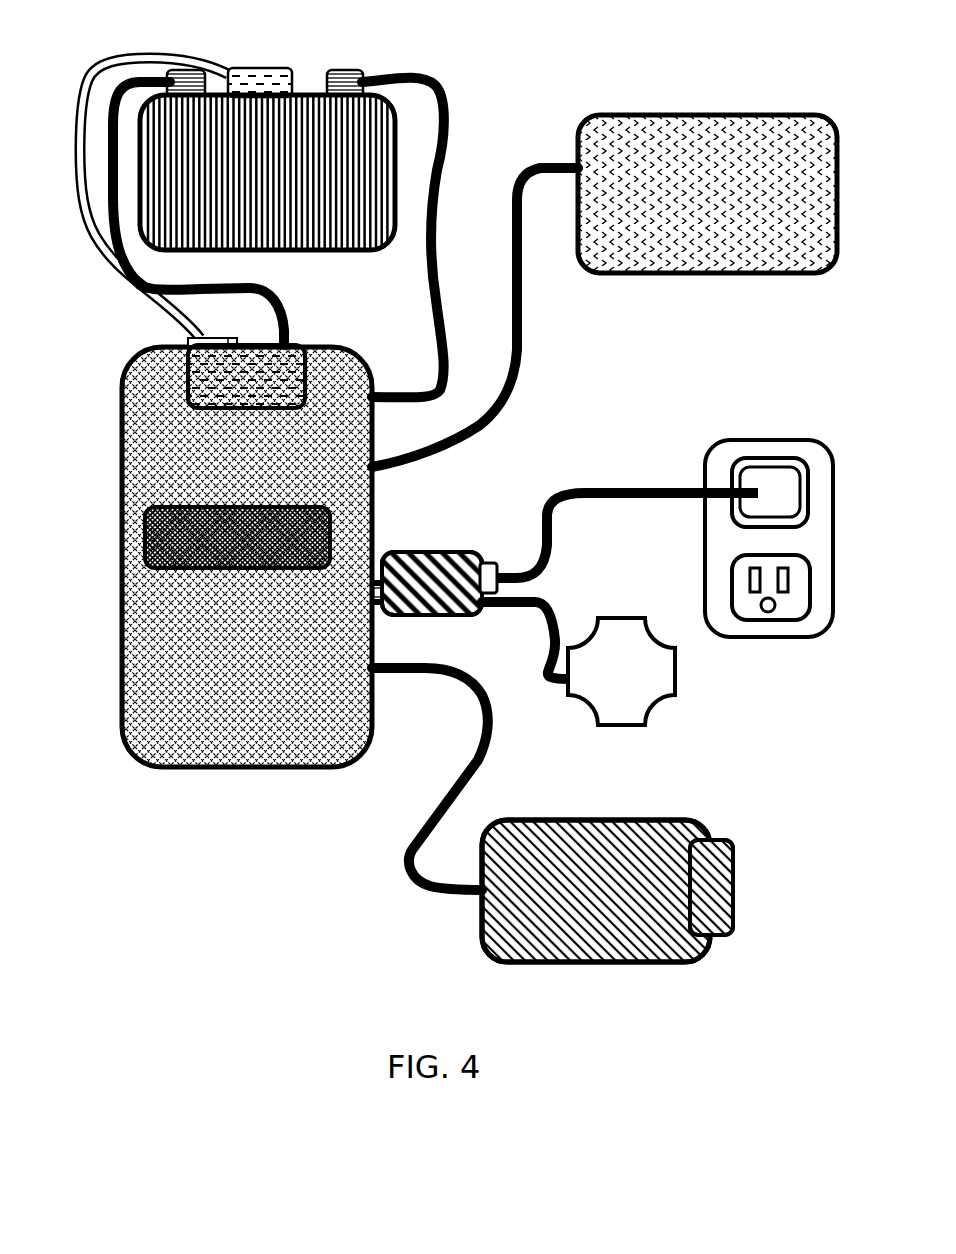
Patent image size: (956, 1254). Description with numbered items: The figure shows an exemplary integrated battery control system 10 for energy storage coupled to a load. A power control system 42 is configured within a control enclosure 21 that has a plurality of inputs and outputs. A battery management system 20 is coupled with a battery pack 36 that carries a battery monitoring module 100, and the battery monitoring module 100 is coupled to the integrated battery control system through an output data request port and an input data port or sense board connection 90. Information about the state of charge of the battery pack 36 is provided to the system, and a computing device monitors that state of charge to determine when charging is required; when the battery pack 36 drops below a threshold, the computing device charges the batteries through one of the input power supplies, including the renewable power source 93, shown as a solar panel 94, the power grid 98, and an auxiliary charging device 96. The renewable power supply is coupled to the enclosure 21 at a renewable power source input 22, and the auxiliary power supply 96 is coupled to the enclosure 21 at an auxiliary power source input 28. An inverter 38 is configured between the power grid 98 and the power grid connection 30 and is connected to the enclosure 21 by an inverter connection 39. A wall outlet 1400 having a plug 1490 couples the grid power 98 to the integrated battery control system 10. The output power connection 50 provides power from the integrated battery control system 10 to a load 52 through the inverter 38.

The integrated battery control system 10 is at (211, 583).
The control enclosure 21 is at (150, 583).
The power control system 42 is at (145, 530).
The battery management system 20 is at (293, 358).
The sense board connection 90 is at (188, 332).
The battery monitoring module 100 is at (243, 67).
The battery pack 36 is at (377, 100).
The renewable power source input 22 is at (380, 476).
The renewable power source 93 is at (707, 160).
The solar panel 94 is at (710, 143).
The inverter connection 39 is at (378, 577).
The inverter 38 is at (410, 558).
The output power connection 50 is at (384, 618).
The power grid connection 30 is at (496, 564).
The load 52 is at (617, 647).
The auxiliary power source input 28 is at (376, 678).
The auxiliary charging device 96 is at (603, 852).
The wall outlet 1400 is at (765, 547).
The plug 1490 is at (775, 500).
The power grid 98 is at (766, 608).